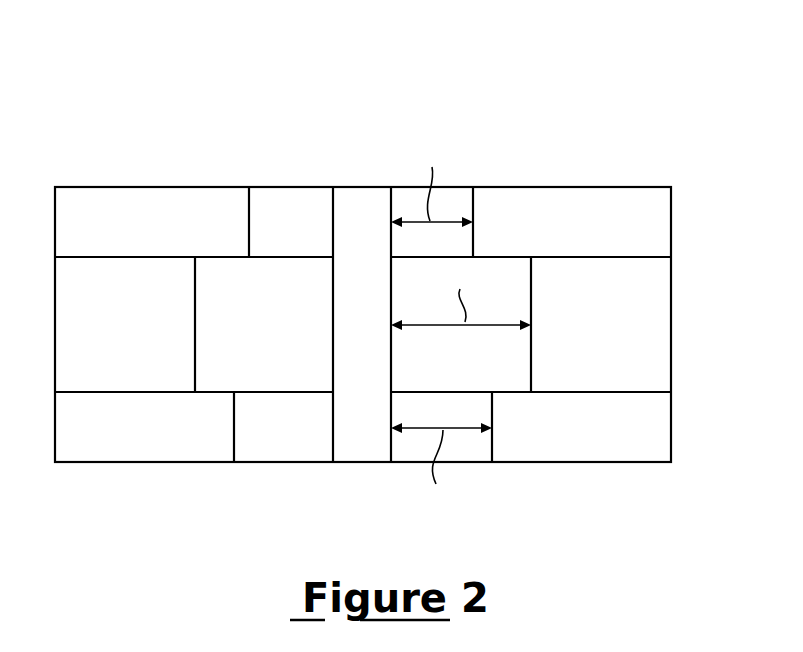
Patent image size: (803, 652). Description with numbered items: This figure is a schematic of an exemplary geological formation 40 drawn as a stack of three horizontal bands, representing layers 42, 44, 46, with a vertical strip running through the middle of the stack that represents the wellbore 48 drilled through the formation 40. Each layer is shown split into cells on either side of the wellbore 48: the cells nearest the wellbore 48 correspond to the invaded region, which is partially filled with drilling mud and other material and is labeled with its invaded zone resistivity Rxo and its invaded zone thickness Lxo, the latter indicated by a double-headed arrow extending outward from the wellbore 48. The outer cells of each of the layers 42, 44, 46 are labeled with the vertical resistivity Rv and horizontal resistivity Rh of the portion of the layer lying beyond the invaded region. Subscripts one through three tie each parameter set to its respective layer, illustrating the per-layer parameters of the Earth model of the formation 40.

The geological formation 40 is at (643, 140).
The layer 42 is at (672, 220).
The layer 44 is at (672, 323).
The layer 46 is at (672, 425).
The wellbore 48 is at (391, 205).